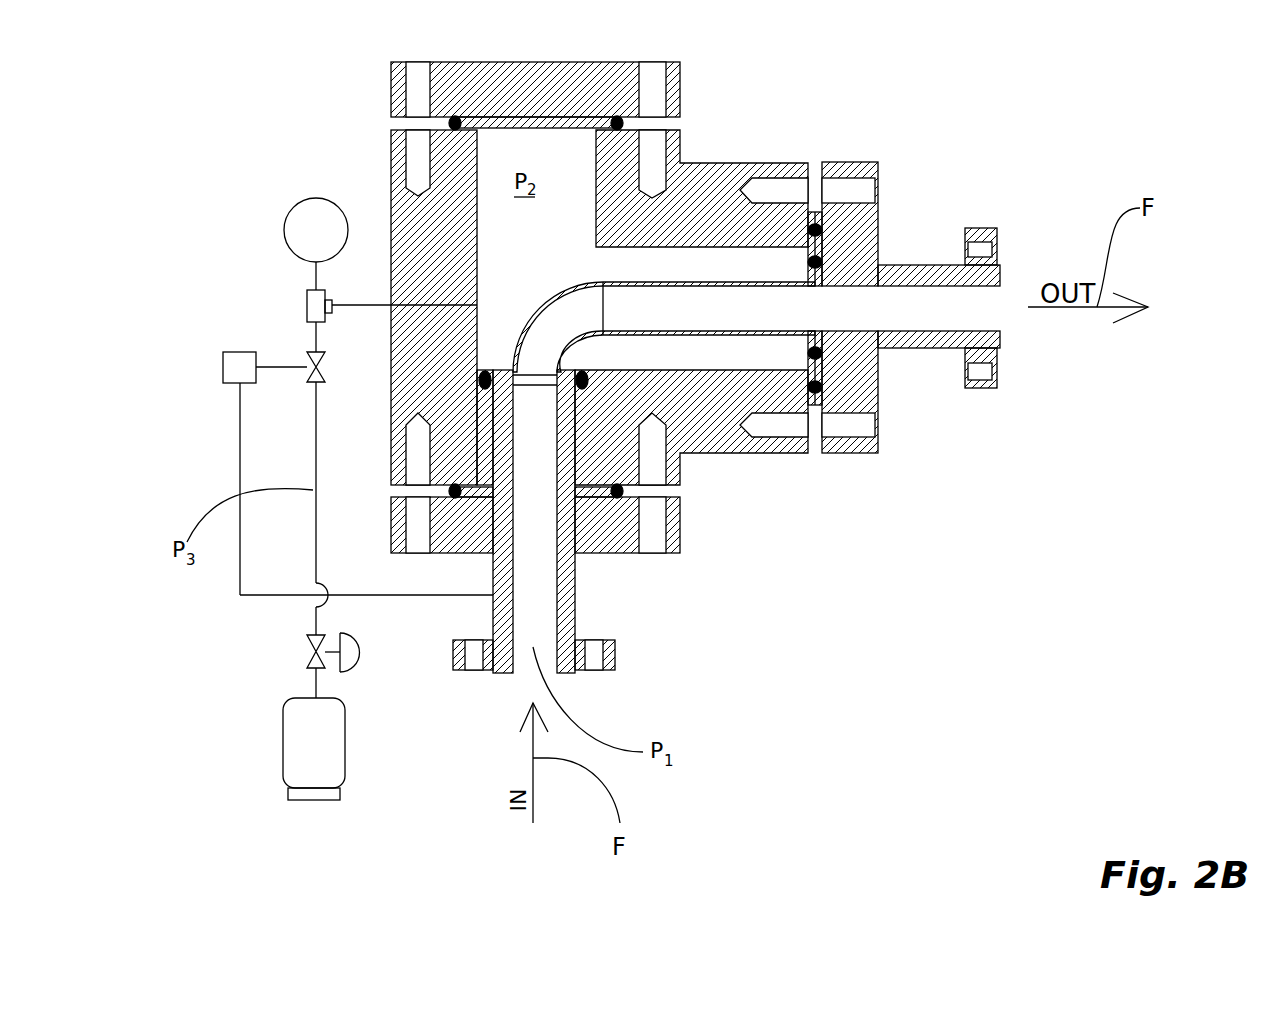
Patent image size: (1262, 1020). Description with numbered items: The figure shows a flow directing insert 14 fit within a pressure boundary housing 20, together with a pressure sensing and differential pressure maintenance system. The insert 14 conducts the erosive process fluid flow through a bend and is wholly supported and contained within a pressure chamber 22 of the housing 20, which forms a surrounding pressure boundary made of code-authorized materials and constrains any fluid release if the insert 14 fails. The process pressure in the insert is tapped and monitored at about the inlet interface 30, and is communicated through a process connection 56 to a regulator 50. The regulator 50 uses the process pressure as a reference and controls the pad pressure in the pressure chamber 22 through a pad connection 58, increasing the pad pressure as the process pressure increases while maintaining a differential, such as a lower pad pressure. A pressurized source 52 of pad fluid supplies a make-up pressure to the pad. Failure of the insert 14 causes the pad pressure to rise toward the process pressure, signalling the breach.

The insert 14 is at (722, 280).
The pressure boundary housing 20 is at (722, 453).
The pressure chamber 22 is at (538, 250).
The inlet interface 30 is at (493, 670).
The regulator 50 is at (222, 365).
The pressurized source 52 is at (293, 745).
The process connection 56 is at (268, 596).
The pad connection 58 is at (367, 307).